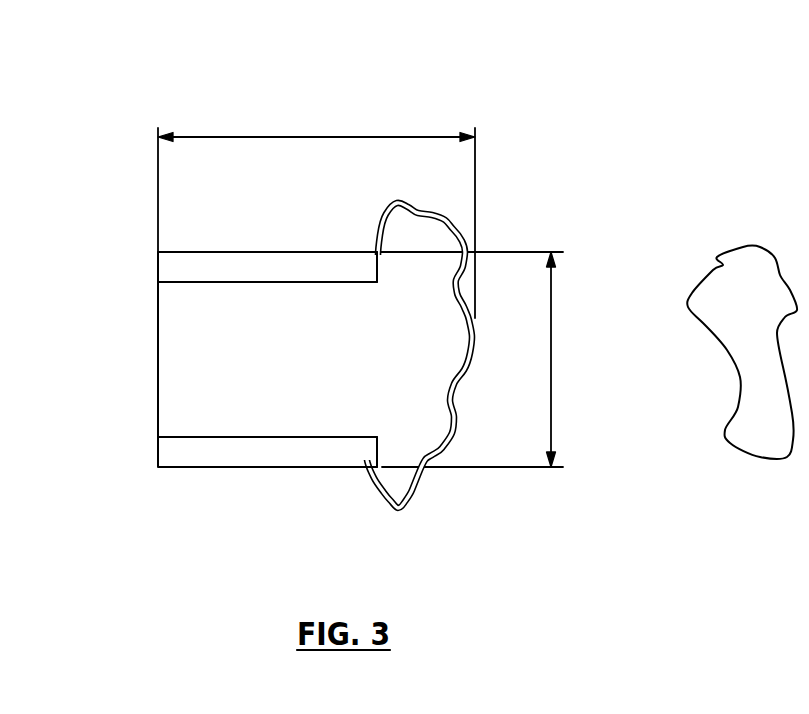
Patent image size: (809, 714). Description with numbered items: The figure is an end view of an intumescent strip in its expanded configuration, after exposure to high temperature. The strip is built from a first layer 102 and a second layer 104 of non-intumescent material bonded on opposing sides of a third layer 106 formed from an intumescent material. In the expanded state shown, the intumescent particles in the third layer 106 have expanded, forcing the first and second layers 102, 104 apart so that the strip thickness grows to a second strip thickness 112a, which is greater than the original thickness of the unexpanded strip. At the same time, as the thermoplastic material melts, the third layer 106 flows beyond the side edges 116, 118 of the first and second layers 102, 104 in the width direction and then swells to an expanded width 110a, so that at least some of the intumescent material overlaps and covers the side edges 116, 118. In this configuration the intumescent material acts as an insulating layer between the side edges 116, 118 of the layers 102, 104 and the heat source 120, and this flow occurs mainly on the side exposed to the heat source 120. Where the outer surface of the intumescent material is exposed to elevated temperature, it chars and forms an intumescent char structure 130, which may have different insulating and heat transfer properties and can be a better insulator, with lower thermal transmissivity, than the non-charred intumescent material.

The first layer 102 is at (255, 453).
The second layer 104 is at (203, 262).
The third layer 106 is at (182, 367).
The expanded width 110a is at (300, 137).
The second strip thickness 112a is at (551, 350).
The side edge 116 is at (377, 456).
The side edge 118 is at (367, 261).
The heat source 120 is at (758, 265).
The intumescent char structure 130 is at (422, 482).